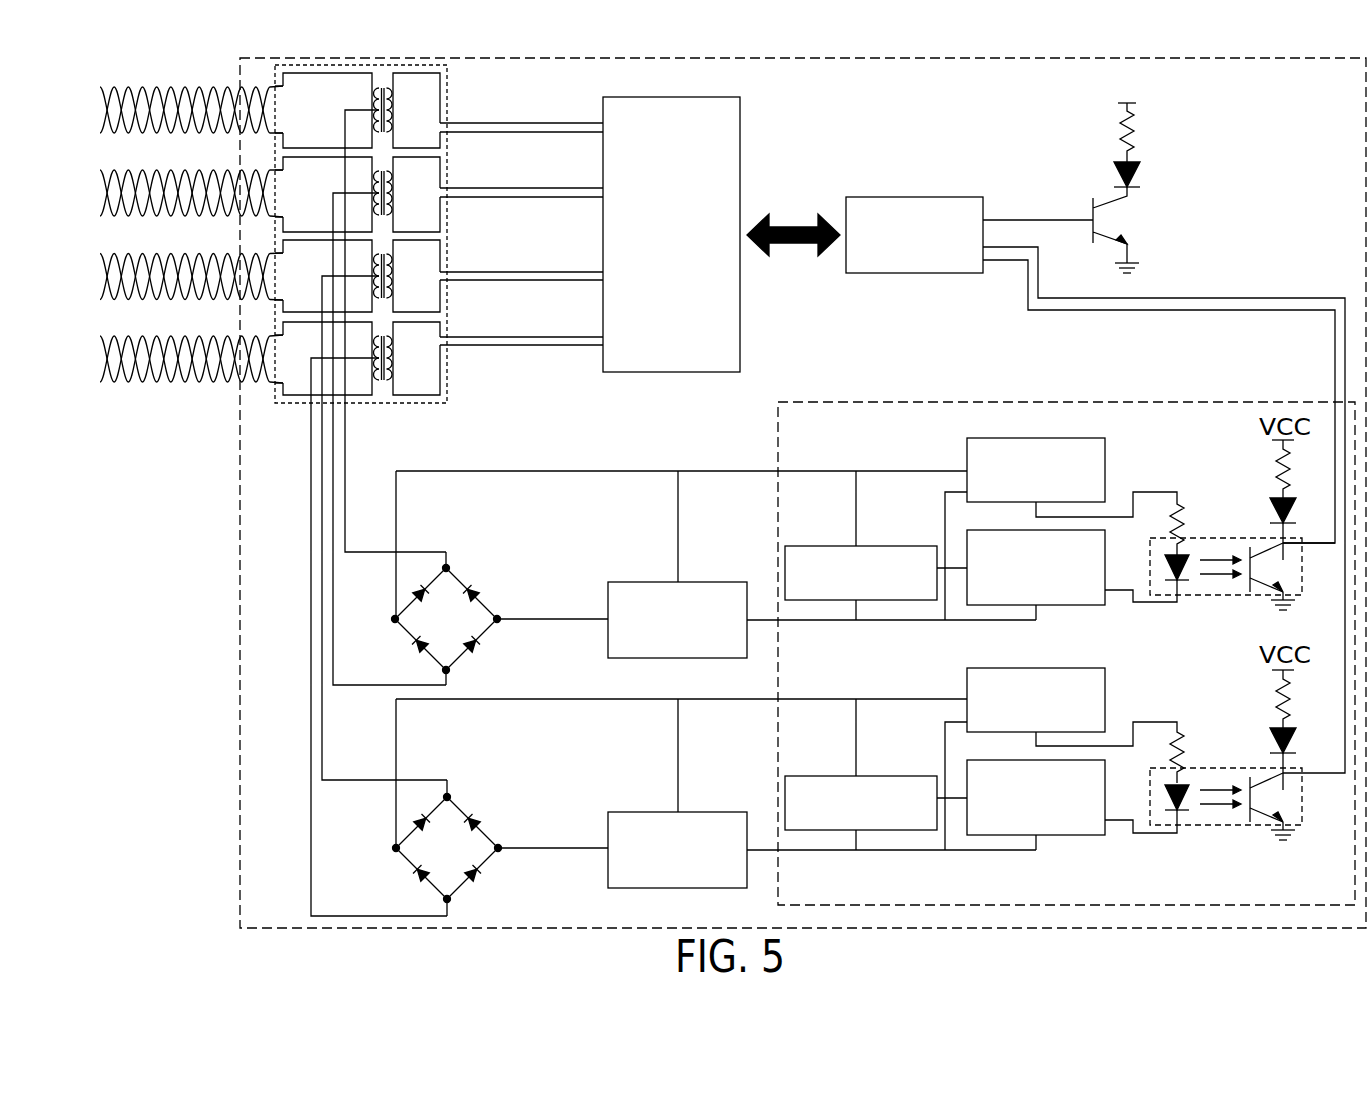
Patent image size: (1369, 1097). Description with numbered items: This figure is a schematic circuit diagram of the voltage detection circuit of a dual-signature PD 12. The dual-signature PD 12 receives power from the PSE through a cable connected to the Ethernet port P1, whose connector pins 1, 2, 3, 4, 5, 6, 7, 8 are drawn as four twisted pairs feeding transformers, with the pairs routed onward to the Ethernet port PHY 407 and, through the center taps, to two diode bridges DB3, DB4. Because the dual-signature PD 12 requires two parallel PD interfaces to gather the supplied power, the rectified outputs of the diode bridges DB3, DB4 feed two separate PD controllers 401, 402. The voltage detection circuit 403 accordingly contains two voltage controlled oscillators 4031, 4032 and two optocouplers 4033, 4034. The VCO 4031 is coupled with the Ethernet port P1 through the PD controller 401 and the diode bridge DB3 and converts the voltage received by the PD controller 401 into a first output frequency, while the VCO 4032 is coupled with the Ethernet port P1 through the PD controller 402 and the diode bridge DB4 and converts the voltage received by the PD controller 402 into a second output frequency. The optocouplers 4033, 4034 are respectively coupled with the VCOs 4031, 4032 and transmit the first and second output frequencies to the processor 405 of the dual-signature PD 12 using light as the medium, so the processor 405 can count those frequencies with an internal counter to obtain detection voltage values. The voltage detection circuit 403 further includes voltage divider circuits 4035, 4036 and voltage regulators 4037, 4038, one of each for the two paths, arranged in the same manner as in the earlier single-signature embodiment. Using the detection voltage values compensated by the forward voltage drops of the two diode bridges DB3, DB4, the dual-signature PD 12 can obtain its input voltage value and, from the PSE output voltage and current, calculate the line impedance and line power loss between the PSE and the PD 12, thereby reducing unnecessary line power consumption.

The dual-signature PD 12 is at (240, 483).
The Ethernet port P1 is at (449, 83).
The pin 1 is at (287, 90).
The pin 2 is at (288, 132).
The pin 3 is at (288, 178).
The pin 4 is at (288, 255).
The pin 5 is at (288, 297).
The pin 6 is at (288, 217).
The pin 7 is at (288, 337).
The pin 8 is at (288, 378).
The Ethernet port PHY 407 is at (740, 127).
The processor 405 is at (917, 197).
The voltage detection circuit 403 is at (778, 428).
The PD controller 401 is at (643, 582).
The PD controller 402 is at (643, 812).
The voltage controlled oscillator 4031 is at (1075, 606).
The voltage controlled oscillator 4032 is at (1075, 836).
The optocoupler 4033 is at (1222, 538).
The optocoupler 4034 is at (1222, 768).
The voltage divider circuit 4035 is at (822, 546).
The voltage divider circuit 4036 is at (822, 776).
The voltage regulator 4037 is at (1105, 476).
The voltage regulator 4038 is at (1105, 704).
The diode bridge DB3 is at (500, 618).
The diode bridge DB4 is at (501, 848).